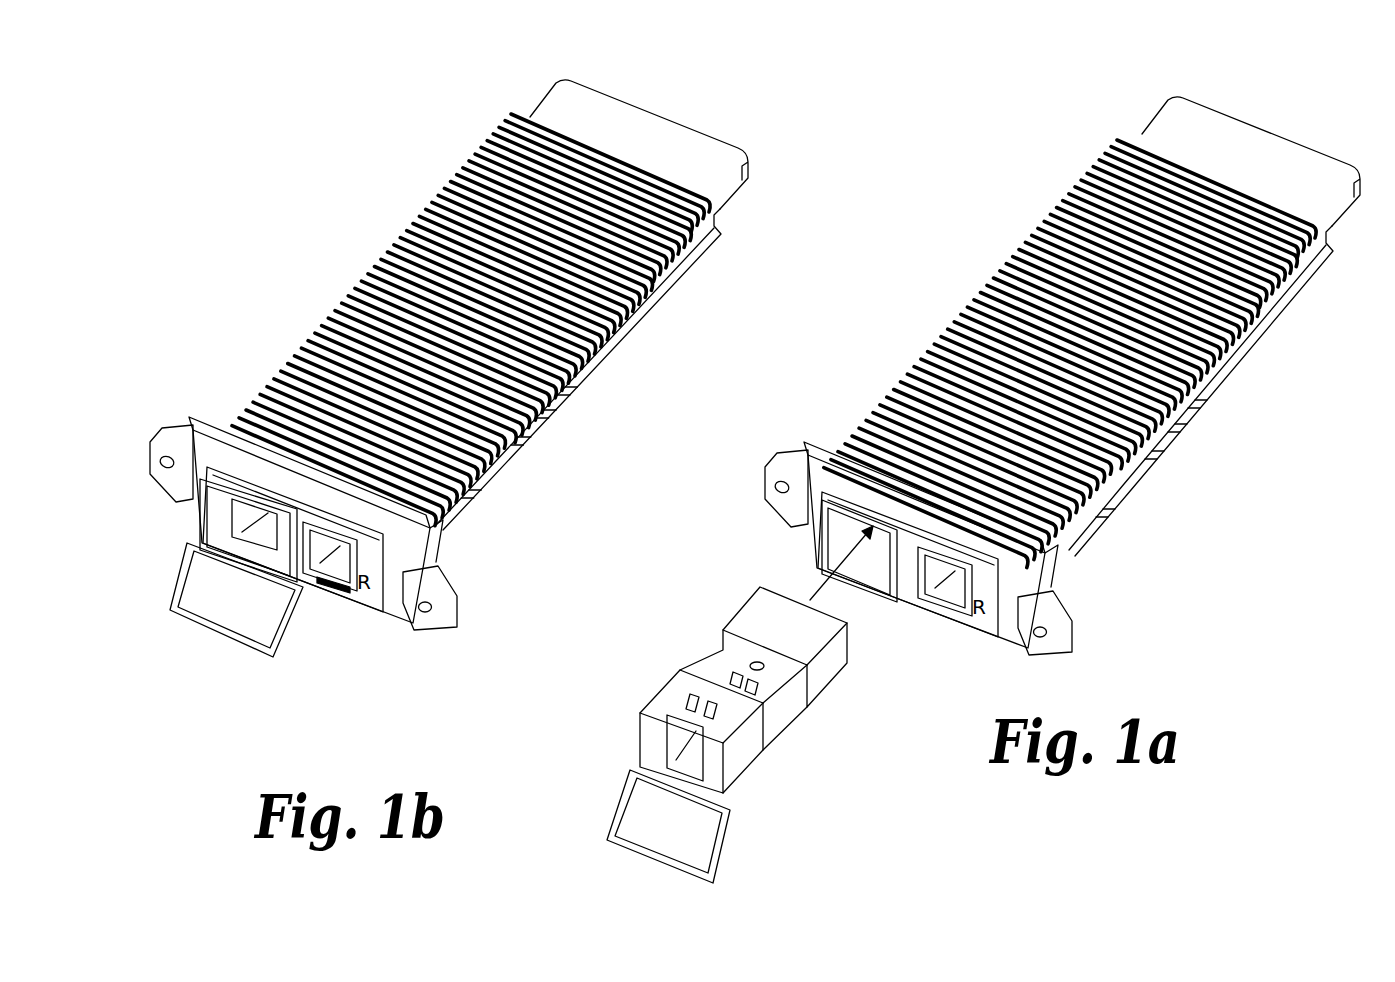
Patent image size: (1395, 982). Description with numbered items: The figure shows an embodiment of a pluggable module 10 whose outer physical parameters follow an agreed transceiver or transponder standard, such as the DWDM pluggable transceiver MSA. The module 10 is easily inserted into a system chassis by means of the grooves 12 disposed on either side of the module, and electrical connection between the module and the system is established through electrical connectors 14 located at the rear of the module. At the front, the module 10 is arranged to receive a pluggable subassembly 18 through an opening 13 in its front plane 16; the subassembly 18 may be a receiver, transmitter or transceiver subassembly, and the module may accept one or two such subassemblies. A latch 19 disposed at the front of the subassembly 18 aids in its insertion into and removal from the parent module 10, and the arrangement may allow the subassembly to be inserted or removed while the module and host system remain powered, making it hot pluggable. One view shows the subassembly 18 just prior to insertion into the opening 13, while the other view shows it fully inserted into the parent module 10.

In FIG. 1B, the pluggable module 10 is at (425, 190).
In FIG. 1A, the pluggable module 10 is at (1237, 383).
In FIG. 1B, the grooves 12 is at (373, 262).
In FIG. 1A, the grooves 12 is at (1057, 207).
In FIG. 1A, the opening 13 is at (833, 540).
In FIG. 1B, the electrical connectors 14 is at (670, 133).
In FIG. 1A, the electrical connectors 14 is at (1300, 145).
In FIG. 1A, the front plane 16 is at (912, 600).
In FIG. 1B, the pluggable subassembly 18 is at (220, 522).
In FIG. 1A, the pluggable subassembly 18 is at (668, 702).
In FIG. 1B, the latch 19 is at (223, 633).
In FIG. 1A, the latch 19 is at (660, 863).